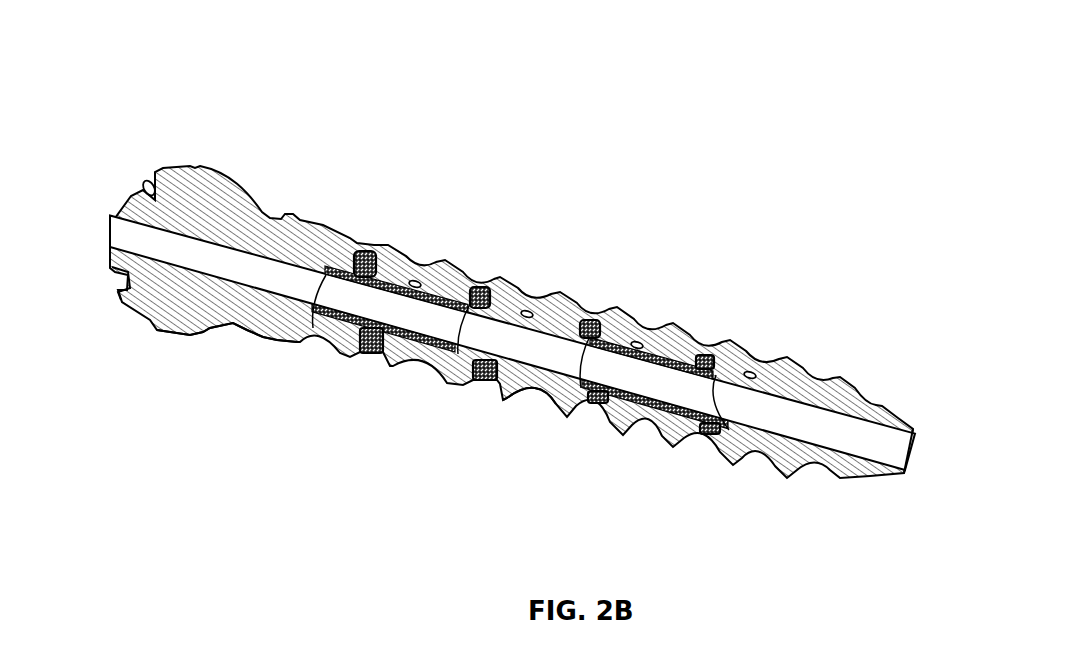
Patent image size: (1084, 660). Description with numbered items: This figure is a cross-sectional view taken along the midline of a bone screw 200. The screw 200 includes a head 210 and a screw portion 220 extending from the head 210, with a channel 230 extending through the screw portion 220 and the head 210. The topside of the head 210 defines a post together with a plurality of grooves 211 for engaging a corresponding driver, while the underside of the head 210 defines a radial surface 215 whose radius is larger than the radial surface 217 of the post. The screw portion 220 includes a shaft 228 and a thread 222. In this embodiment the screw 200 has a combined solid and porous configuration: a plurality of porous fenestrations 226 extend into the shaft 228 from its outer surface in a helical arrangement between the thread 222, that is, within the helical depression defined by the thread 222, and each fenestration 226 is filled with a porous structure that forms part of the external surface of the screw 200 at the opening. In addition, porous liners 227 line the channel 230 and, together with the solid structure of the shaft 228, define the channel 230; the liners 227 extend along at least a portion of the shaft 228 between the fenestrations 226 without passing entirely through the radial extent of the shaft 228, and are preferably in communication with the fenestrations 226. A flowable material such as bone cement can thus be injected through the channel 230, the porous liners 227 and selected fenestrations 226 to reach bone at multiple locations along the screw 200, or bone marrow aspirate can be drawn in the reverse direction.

The screw 200 is at (502, 283).
The head 210 is at (243, 132).
The grooves 211 is at (119, 281).
The radial surface 215 is at (200, 337).
The radial surface of post 217 is at (126, 203).
The screw portion 220 is at (507, 293).
The thread 222 is at (537, 293).
The porous fenestrations 226 is at (479, 286).
The porous liners 227 is at (322, 318).
The shaft 228 is at (533, 388).
The channel 230 is at (910, 452).